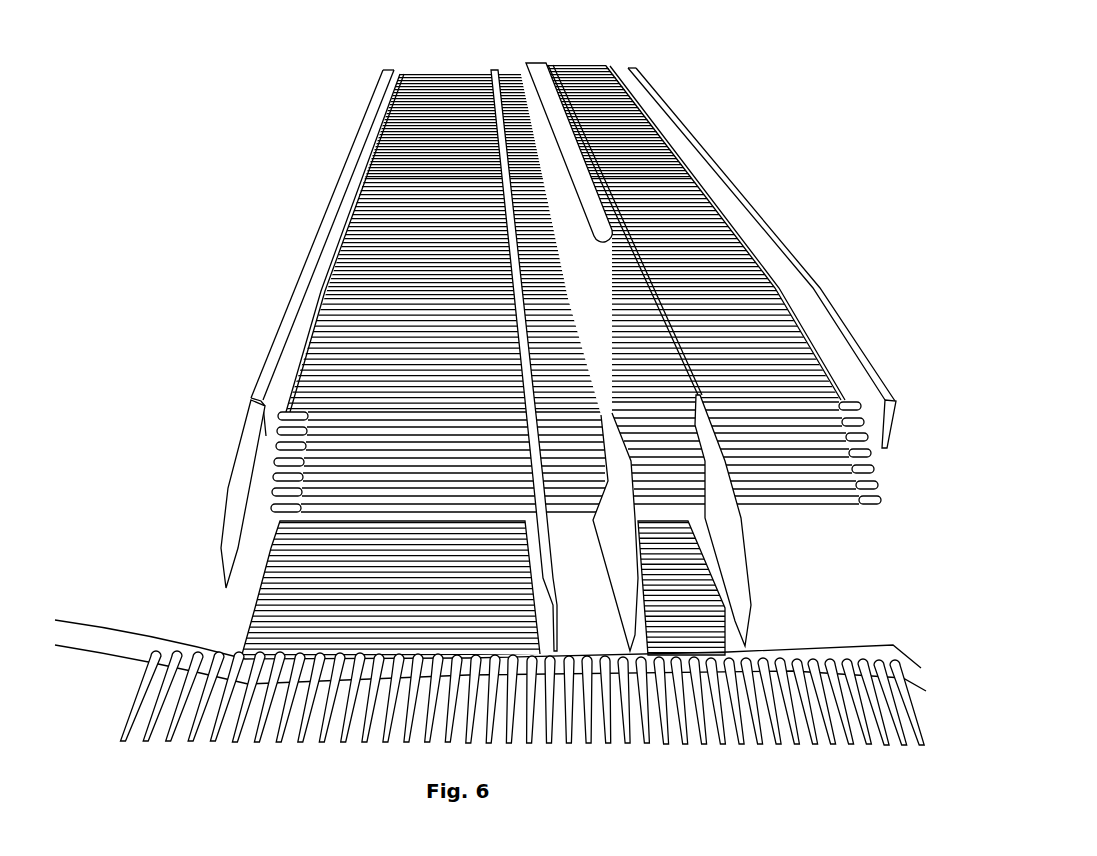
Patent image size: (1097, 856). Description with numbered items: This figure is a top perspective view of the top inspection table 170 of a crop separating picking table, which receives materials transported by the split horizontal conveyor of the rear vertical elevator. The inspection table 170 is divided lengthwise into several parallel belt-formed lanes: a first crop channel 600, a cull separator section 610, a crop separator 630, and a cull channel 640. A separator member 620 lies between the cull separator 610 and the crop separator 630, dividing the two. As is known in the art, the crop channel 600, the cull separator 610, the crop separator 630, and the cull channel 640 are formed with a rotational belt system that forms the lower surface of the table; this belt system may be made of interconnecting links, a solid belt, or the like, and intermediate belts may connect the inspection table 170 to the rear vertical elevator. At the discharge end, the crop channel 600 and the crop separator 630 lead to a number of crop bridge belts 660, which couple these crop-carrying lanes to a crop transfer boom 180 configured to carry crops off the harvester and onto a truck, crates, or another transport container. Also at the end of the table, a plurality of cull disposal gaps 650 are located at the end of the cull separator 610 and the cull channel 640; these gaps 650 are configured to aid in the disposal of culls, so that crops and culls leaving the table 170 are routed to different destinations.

The top inspection table 170 is at (258, 33).
The crop transfer boom 180 is at (303, 757).
The first crop channel 600 is at (387, 122).
The cull separator section 610 is at (500, 60).
The separator member 620 is at (535, 52).
The crop separator 630 is at (683, 482).
The cull channel 640 is at (730, 232).
The cull disposal gaps 650 is at (590, 579).
The crop bridge belts 660 is at (258, 588).